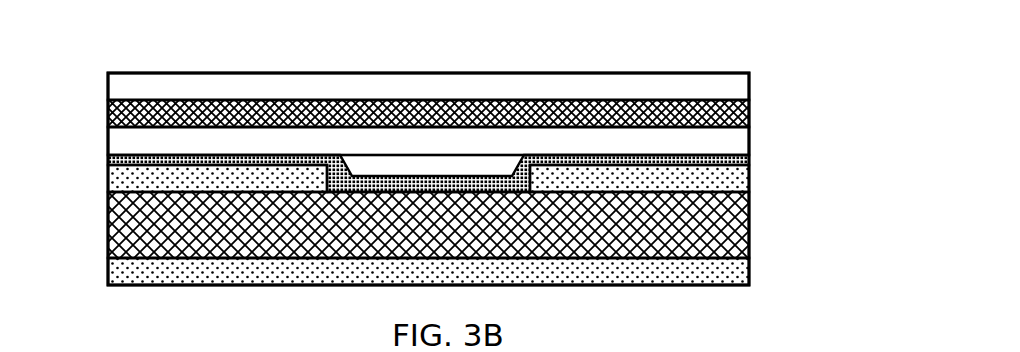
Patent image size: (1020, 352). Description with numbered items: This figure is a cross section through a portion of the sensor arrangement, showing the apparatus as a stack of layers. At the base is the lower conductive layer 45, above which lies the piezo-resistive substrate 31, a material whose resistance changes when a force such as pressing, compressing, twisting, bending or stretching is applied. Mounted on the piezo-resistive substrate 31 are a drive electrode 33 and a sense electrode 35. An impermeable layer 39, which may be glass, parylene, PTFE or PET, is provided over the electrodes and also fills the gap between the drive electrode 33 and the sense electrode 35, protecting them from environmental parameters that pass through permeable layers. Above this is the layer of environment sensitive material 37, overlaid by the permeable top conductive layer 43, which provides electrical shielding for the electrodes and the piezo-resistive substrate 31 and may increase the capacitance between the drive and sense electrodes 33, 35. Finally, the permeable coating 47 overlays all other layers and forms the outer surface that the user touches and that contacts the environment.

The permeable coating 47 is at (737, 87).
The top conductive layer 43 is at (737, 110).
The layer of environment sensitive material 37 is at (737, 141).
The impermeable layer 39 is at (750, 160).
The sense electrode 35 is at (738, 180).
The drive electrode 33 is at (135, 180).
The piezo-resistive substrate 31 is at (750, 233).
The lower conductive layer 45 is at (738, 270).